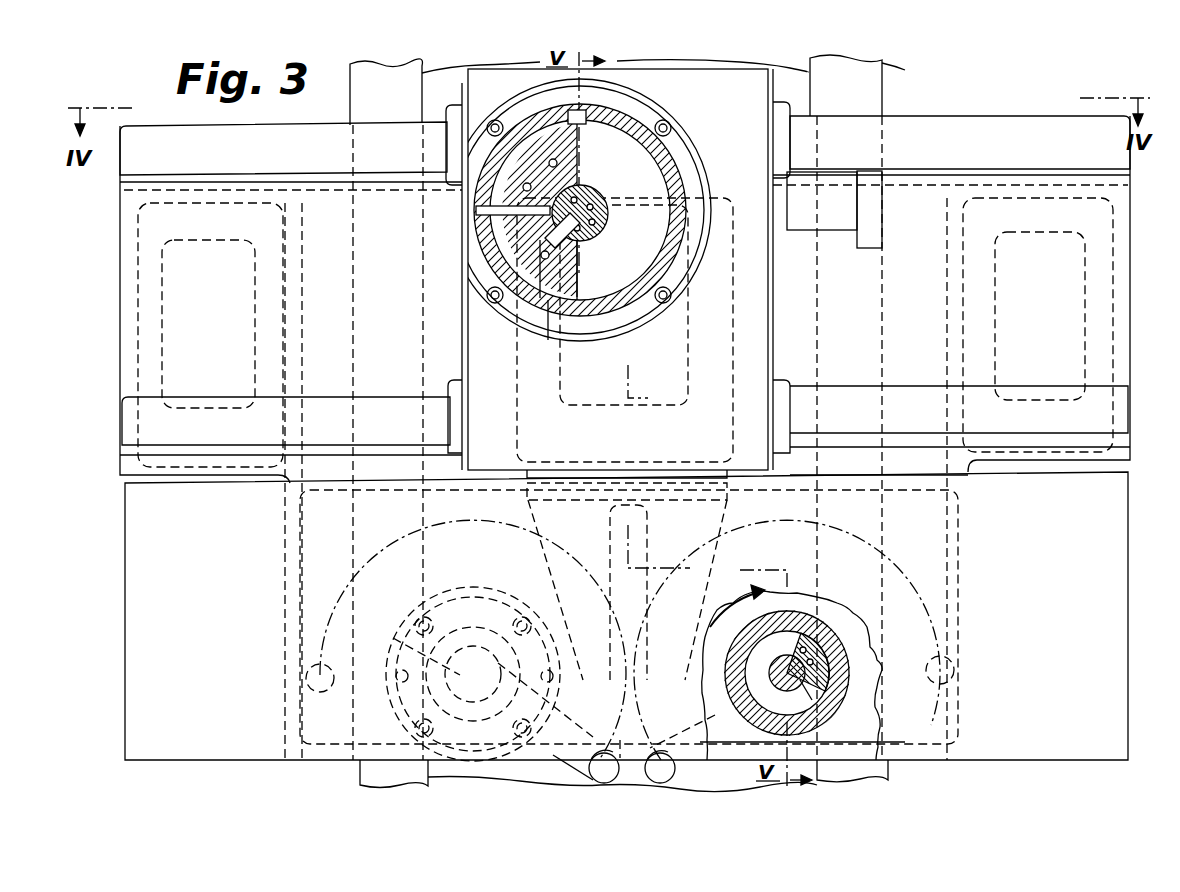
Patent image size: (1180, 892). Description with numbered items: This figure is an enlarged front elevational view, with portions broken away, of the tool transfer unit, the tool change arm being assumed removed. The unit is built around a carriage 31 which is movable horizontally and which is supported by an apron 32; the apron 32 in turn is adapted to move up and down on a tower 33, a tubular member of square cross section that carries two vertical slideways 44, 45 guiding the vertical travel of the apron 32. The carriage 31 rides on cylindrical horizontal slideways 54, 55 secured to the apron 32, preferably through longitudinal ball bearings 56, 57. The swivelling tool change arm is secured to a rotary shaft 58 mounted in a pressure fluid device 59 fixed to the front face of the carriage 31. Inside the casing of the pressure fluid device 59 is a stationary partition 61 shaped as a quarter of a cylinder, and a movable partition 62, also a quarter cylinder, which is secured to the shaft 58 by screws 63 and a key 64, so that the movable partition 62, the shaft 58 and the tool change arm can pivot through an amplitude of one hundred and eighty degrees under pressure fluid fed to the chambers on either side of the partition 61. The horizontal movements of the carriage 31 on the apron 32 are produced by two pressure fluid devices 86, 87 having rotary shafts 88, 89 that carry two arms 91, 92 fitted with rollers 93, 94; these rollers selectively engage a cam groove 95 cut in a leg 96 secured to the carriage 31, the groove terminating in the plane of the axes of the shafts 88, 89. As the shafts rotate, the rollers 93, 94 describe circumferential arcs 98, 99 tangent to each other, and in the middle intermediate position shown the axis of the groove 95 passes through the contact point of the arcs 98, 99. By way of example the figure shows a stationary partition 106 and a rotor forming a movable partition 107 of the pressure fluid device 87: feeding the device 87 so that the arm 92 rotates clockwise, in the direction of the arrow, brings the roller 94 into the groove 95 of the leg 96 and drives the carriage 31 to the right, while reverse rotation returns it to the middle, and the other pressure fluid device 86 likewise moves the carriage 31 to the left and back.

The carriage 31 is at (737, 90).
The apron 32 is at (120, 272).
The tower 33 is at (420, 80).
The vertical slideway 44 is at (357, 98).
The vertical slideway 45 is at (867, 104).
The horizontal slideway 54 is at (150, 430).
The horizontal slideway 55 is at (1037, 130).
The longitudinal ball bearing 56 is at (458, 378).
The longitudinal ball bearing 57 is at (472, 200).
The rotary shaft 58 is at (596, 182).
The pressure fluid device 59 is at (652, 305).
The partition 61 is at (524, 160).
The movable partition 62 is at (590, 268).
The screws 63 is at (541, 256).
The key 64 is at (572, 237).
The pressure fluid device 86 is at (340, 760).
The pressure fluid device 87 is at (750, 722).
The rotary shaft 88 is at (418, 632).
The rotary shaft 89 is at (768, 672).
The arm 91 is at (580, 769).
The arm 92 is at (690, 768).
The roller 93 is at (610, 762).
The roller 94 is at (640, 755).
The cam groove 95 is at (618, 736).
The leg 96 is at (736, 524).
The circumferential arc 98 is at (470, 516).
The circumferential arc 99 is at (842, 532).
The stationary partition 106 is at (803, 640).
The movable partition 107 is at (822, 682).